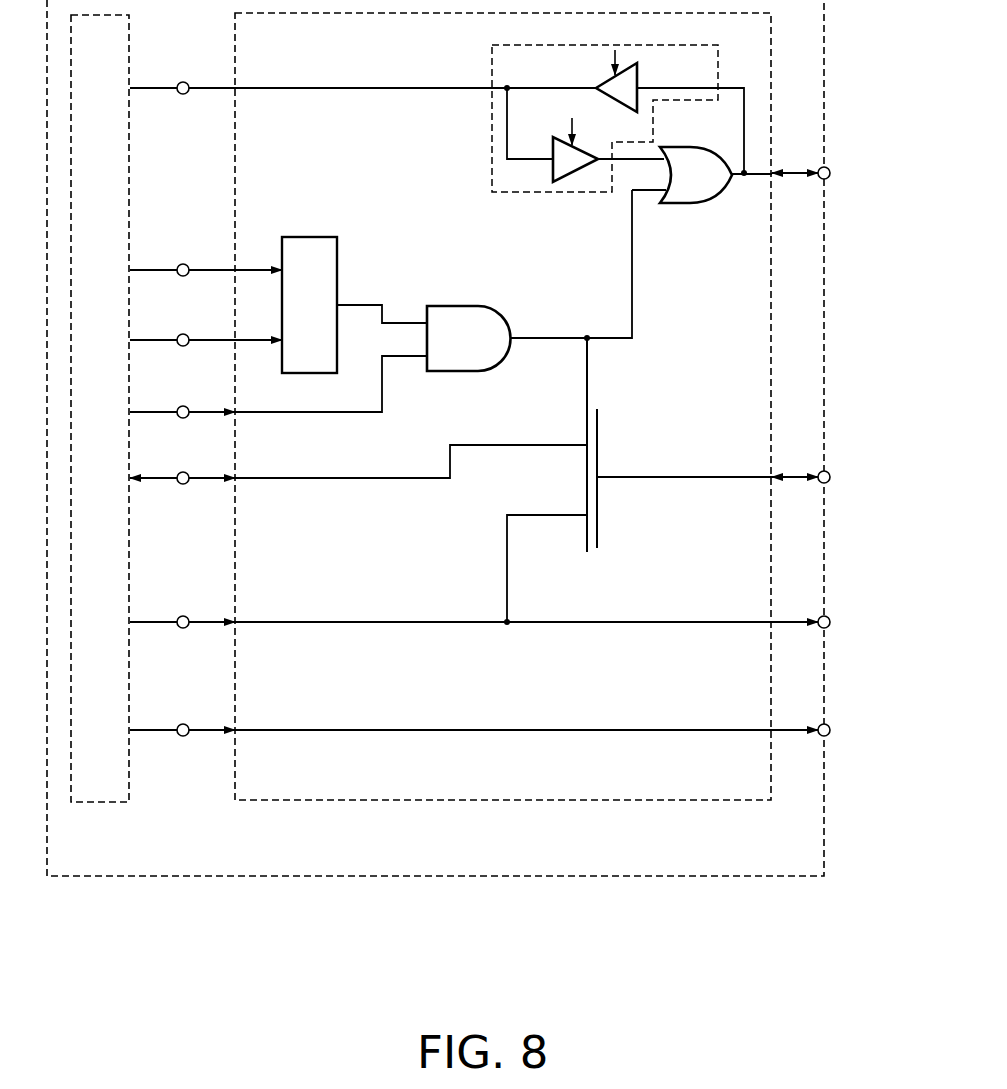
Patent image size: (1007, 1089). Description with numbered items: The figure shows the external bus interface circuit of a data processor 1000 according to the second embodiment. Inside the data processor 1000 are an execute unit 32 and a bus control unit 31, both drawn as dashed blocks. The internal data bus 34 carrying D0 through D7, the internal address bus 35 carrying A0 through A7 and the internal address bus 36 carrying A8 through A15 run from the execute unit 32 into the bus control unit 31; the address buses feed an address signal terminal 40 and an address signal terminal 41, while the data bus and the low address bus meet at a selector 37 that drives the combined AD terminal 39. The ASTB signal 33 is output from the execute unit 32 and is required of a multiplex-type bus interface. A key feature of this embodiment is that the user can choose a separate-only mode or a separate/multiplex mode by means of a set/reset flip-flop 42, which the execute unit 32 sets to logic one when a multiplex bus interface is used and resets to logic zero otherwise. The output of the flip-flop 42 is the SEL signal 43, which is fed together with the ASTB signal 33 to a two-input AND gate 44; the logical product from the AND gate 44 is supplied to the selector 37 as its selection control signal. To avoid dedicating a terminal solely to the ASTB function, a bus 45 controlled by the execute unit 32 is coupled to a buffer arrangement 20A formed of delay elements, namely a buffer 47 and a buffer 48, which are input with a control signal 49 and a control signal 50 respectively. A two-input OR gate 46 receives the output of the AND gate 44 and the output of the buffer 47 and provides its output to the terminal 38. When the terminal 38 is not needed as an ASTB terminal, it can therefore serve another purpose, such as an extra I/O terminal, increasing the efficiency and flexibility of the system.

The data processor 1000 is at (773, 877).
The bus control unit 31 is at (295, 802).
The execute unit 32 is at (90, 802).
The buffer arrangement 20A is at (490, 178).
The ASTB signal 33 is at (382, 392).
The internal data bus 34 is at (254, 478).
The internal address bus 35 is at (254, 622).
The internal address bus 36 is at (254, 730).
The selector 37 is at (622, 477).
The terminal 38 is at (829, 168).
The combined AD terminal 39 is at (829, 472).
The address signal terminal 40 is at (829, 616).
The address signal terminal 41 is at (830, 728).
The flip-flop 42 is at (317, 237).
The SEL signal 43 is at (377, 302).
The AND gate 44 is at (500, 312).
The bus 45 is at (278, 89).
The OR gate 46 is at (700, 147).
The buffer 47 is at (583, 149).
The buffer 48 is at (639, 71).
The control signal 49 is at (572, 118).
The control signal 50 is at (615, 50).